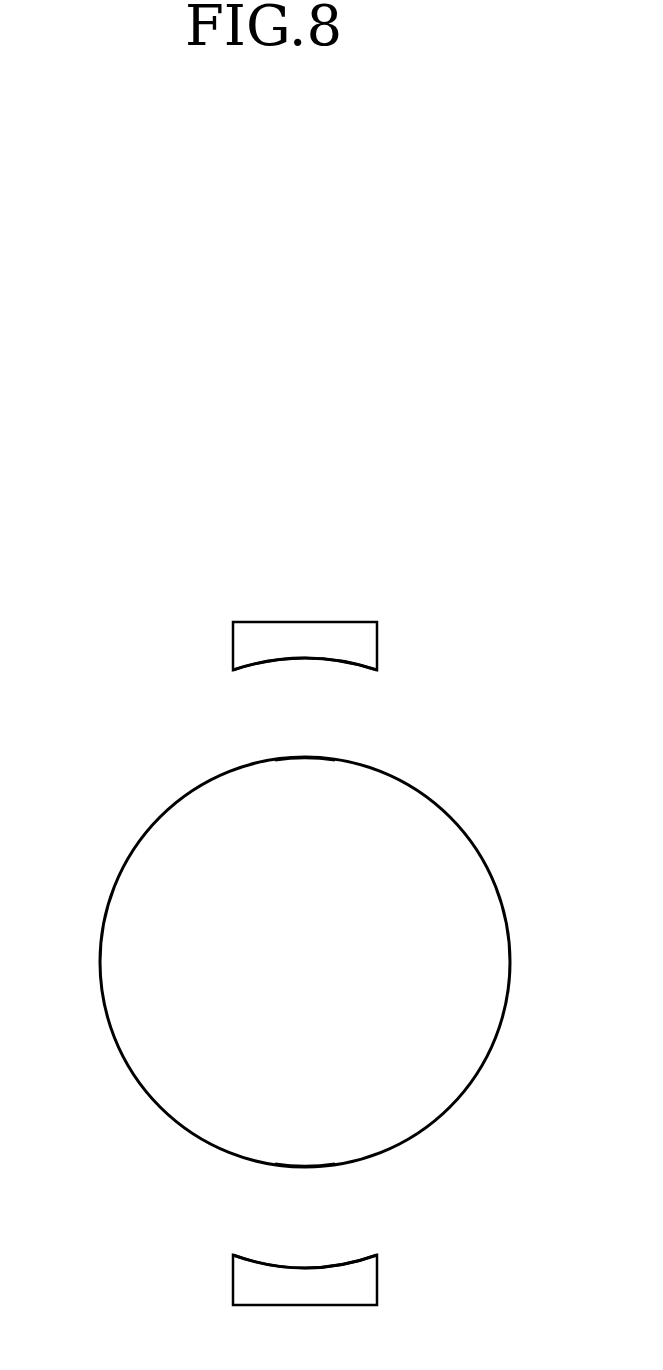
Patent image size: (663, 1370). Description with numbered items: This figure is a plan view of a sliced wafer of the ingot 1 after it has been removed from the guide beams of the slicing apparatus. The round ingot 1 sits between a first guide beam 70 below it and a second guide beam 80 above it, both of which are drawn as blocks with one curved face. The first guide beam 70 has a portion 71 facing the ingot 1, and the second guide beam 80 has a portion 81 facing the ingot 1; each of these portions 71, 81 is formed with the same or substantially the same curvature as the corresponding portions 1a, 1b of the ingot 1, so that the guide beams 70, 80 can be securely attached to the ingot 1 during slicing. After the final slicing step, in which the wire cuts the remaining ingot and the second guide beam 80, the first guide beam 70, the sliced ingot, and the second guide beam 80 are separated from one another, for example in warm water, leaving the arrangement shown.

The ingot 1 is at (103, 919).
The portion of the ingot 1a is at (318, 1166).
The portion of the ingot 1b is at (320, 758).
The first guide beam 70 is at (232, 1283).
The portion facing the ingot 71 is at (340, 1264).
The second guide beam 80 is at (232, 645).
The portion facing the ingot 81 is at (340, 661).